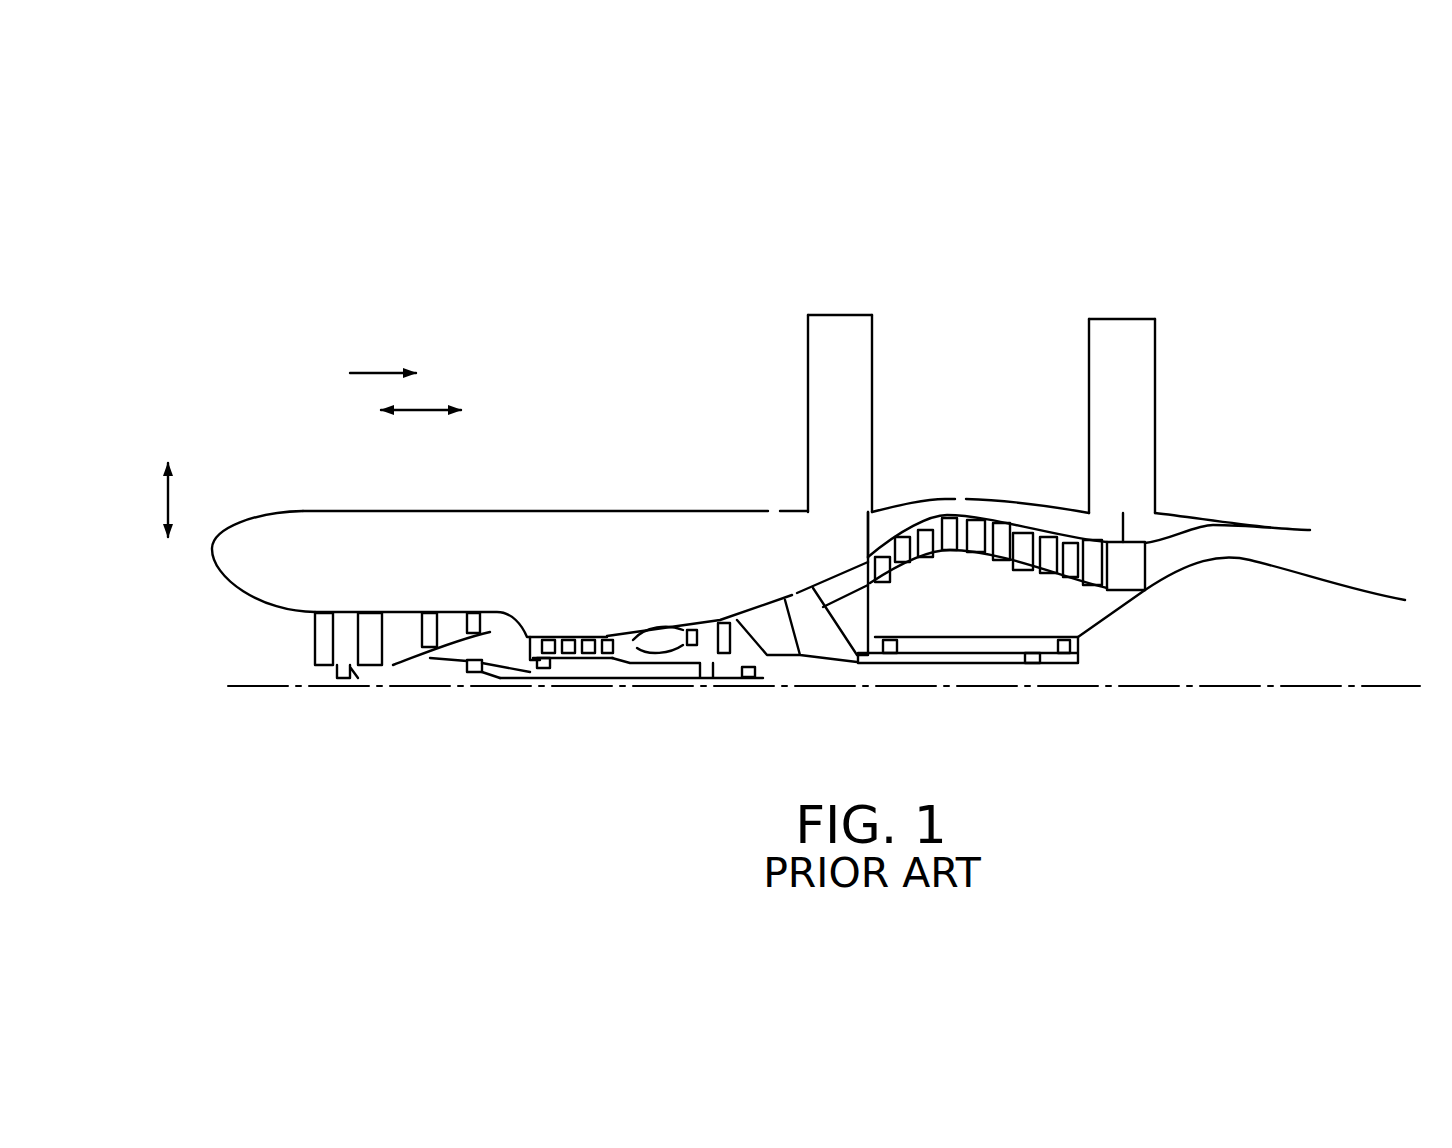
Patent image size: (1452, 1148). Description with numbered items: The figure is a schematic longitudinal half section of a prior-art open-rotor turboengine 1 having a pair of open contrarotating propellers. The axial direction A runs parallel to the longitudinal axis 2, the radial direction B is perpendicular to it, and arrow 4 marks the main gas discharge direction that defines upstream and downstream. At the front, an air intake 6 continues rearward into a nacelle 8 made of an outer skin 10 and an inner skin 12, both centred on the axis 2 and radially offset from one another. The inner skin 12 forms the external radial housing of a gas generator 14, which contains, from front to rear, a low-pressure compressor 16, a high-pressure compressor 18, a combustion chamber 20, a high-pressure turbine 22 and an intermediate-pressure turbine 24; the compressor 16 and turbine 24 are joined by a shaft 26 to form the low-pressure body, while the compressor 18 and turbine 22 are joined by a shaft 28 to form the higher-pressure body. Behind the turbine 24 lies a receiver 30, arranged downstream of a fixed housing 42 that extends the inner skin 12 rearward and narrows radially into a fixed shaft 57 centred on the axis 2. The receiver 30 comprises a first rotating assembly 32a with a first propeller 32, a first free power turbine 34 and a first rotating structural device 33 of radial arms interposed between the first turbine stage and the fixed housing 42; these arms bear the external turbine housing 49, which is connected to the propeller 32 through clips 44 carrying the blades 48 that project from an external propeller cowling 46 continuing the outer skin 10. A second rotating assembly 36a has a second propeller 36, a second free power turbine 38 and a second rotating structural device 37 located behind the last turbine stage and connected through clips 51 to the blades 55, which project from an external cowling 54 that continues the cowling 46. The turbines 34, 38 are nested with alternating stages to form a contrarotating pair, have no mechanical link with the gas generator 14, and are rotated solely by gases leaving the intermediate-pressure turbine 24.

The turboengine 1 is at (280, 474).
The longitudinal axis 2 is at (232, 690).
The main gas discharge direction 4 is at (394, 371).
The air intake 6 is at (257, 629).
The nacelle 8 is at (449, 529).
The outer skin 10 is at (600, 510).
The inner skin 12 is at (407, 616).
The gas generator 14 is at (562, 722).
The low-pressure compressor 16 is at (327, 659).
The high-pressure compressor 18 is at (560, 677).
The combustion chamber 20 is at (657, 643).
The high-pressure turbine 22 is at (690, 646).
The intermediate-pressure turbine 24 is at (723, 654).
The shaft 26 is at (587, 678).
The shaft 28 is at (633, 668).
The receiver 30 is at (1029, 278).
The first propeller 32 is at (846, 306).
The first rotating assembly 32a is at (858, 220).
The first rotating structural device 33 is at (828, 592).
The first free power turbine 34 is at (949, 539).
The second propeller 36 is at (1121, 308).
The second rotating assembly 36a is at (1196, 220).
The second rotating structural device 37 is at (1130, 570).
The second free power turbine 38 is at (1072, 568).
The fixed housing 42 is at (760, 612).
The clips 44 is at (870, 528).
The external propeller cowling 46 is at (955, 499).
The blades 48 is at (858, 373).
The external turbine housing 49 is at (982, 515).
The clips 51 is at (1120, 527).
The external cowling 54 is at (1025, 502).
The blades 55 is at (1138, 380).
The fixed shaft 57 is at (967, 664).
The axial direction A is at (428, 408).
The radial direction B is at (170, 502).